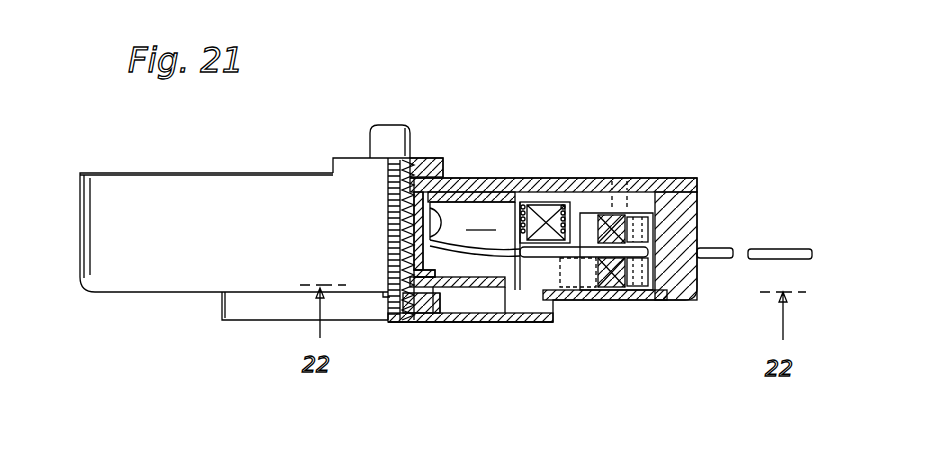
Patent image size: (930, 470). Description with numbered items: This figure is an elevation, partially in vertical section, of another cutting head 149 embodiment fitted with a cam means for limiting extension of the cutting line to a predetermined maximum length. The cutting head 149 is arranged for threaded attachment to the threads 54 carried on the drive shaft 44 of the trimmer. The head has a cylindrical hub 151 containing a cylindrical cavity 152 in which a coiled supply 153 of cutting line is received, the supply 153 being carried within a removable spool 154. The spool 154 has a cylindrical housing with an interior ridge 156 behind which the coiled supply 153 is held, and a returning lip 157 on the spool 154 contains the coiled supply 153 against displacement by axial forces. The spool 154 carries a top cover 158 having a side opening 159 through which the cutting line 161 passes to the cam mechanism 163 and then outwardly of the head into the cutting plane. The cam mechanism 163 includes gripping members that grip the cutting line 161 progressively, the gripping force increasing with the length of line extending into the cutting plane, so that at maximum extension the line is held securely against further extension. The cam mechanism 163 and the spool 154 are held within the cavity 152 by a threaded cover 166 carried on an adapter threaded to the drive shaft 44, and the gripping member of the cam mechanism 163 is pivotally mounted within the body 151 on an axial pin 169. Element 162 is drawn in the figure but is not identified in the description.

The drive shaft 44 is at (383, 122).
The threads 54 is at (388, 198).
The cutting head 149 is at (667, 178).
The cylindrical hub 151 is at (700, 200).
The cylindrical cavity 152 is at (472, 219).
The coiled supply of cutting line 153 is at (542, 204).
The removable spool 154 is at (470, 192).
The interior ridge 156 is at (514, 202).
The returning lip 157 is at (535, 258).
The top cover 158 is at (460, 288).
The side opening 159 is at (510, 268).
The cutting line 161 is at (770, 248).
The lower housing wall 162 is at (440, 295).
The cam mechanism 163 is at (581, 275).
The threaded cover 166 is at (528, 324).
The axial pin 169 is at (395, 263).